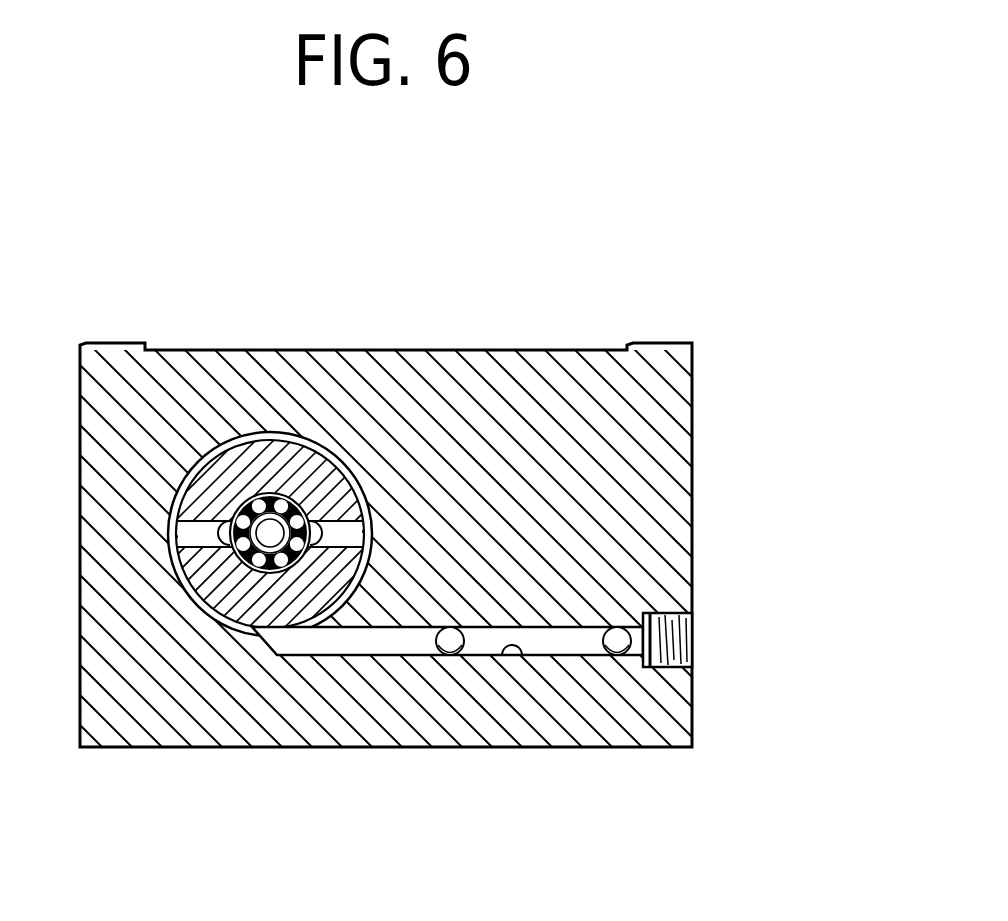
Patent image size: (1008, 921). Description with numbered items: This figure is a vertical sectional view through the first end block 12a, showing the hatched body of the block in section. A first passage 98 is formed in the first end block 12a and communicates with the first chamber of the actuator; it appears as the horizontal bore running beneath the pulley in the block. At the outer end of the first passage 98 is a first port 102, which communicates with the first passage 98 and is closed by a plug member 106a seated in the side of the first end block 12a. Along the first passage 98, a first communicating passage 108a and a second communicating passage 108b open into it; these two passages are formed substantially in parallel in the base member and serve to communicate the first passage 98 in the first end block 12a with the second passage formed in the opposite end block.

The first end block 12a is at (640, 443).
The first passage 98 is at (528, 657).
The first port 102 is at (677, 622).
The plug member 106a is at (680, 652).
The first communicating passage 108a is at (432, 656).
The second communicating passage 108b is at (623, 656).